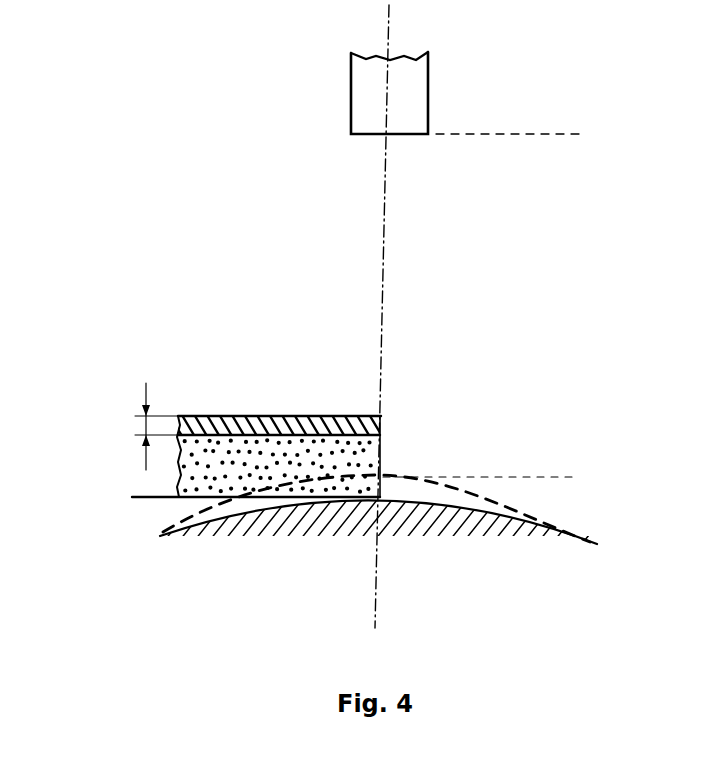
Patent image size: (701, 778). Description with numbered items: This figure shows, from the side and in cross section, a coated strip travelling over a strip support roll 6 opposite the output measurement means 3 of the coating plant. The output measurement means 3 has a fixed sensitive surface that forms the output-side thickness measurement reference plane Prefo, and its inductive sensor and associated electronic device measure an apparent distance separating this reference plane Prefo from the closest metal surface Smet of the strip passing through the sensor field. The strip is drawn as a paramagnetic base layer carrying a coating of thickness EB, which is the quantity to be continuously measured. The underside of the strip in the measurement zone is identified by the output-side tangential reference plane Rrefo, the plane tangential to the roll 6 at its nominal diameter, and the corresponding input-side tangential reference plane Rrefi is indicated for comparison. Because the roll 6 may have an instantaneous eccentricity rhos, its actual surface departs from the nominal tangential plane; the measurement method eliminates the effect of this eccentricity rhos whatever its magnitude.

The output measurement means 3 is at (343, 105).
The strip support roll 6 is at (345, 512).
The coating thickness EB is at (148, 414).
The closest metal surface Smet is at (114, 423).
The output-side tangential reference plane Rrefo is at (217, 496).
The input-side tangential reference plane Rrefi is at (517, 478).
The output-side thickness measurement reference plane Prefo is at (551, 140).
The roll eccentricity rhos is at (385, 492).